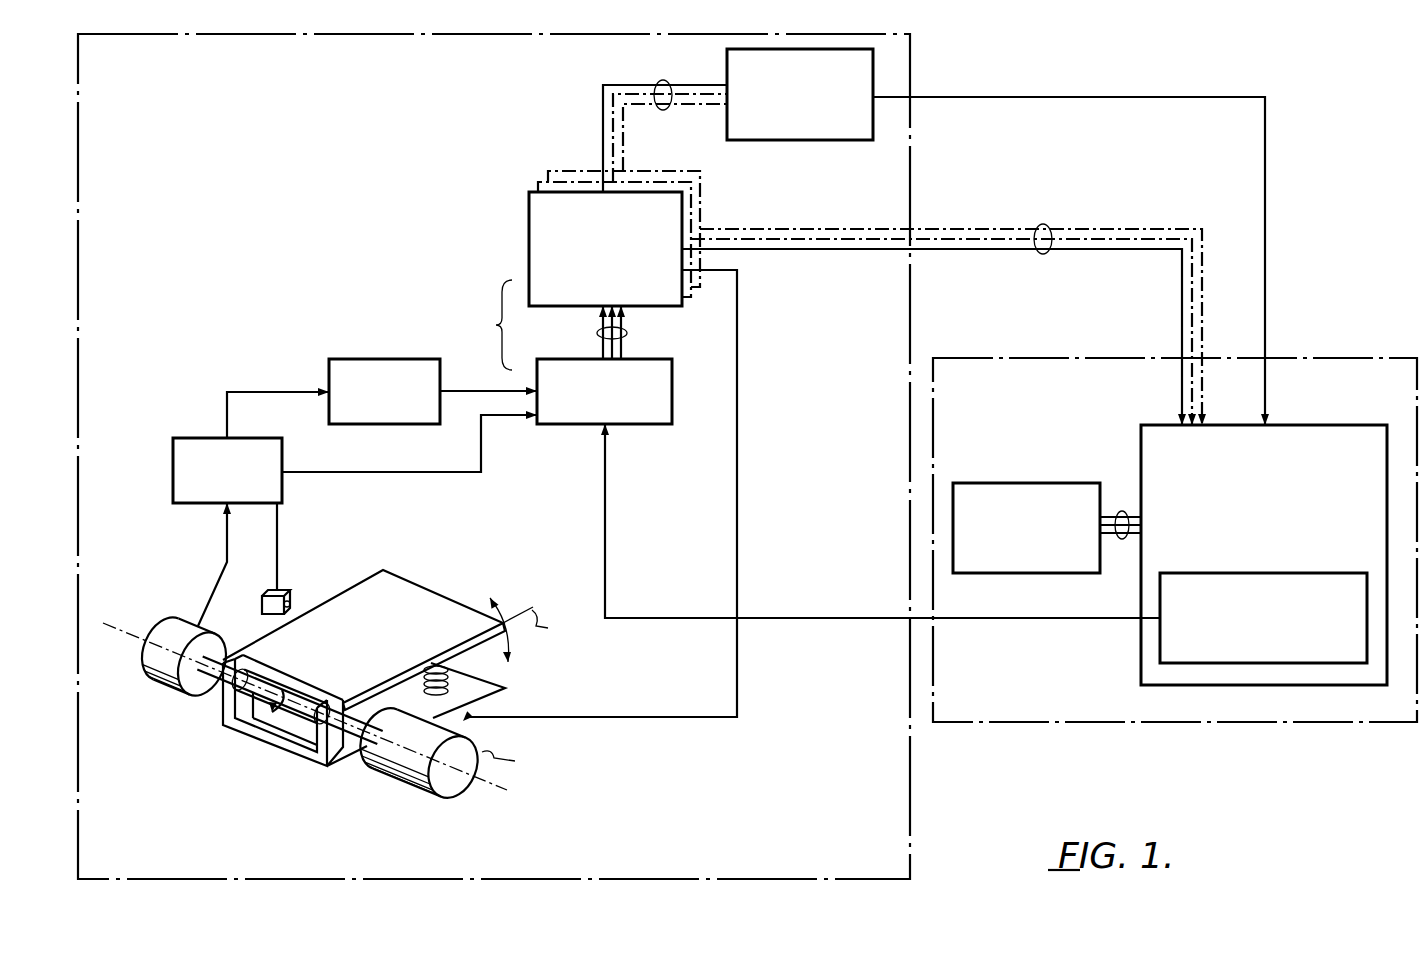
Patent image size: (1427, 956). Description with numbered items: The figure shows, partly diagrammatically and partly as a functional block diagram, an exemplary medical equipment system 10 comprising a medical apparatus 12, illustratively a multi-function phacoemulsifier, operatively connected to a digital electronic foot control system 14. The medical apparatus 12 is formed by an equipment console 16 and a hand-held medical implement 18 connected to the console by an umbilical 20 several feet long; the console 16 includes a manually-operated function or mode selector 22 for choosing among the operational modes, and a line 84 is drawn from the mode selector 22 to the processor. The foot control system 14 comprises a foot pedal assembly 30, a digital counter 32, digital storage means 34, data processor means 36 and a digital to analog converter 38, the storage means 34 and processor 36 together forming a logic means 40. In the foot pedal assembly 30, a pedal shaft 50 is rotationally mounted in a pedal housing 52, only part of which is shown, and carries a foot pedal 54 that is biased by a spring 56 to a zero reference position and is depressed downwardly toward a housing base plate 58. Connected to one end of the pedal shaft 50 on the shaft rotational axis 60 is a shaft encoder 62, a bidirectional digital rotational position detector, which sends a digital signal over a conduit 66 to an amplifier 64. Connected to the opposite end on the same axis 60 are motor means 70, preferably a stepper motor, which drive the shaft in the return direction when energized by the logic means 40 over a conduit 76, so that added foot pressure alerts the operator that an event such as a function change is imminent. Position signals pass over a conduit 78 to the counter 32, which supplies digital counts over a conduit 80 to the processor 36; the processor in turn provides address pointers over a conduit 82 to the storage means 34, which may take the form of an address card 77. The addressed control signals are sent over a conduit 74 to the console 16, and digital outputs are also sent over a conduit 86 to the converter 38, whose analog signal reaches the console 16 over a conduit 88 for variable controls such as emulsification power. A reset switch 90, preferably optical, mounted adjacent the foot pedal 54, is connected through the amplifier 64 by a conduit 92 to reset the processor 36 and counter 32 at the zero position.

The medical equipment system 10 is at (1094, 749).
The medical apparatus 12 is at (1203, 723).
The digital electronic foot control system 14 is at (912, 860).
The equipment console 16 is at (1260, 686).
The hand-held medical implement 18 is at (1006, 482).
The umbilical 20 is at (1128, 512).
The function or mode selector 22 is at (1328, 573).
The foot pedal assembly 30 is at (349, 679).
The digital counter 32 is at (372, 358).
The digital storage means 34 is at (527, 217).
The data processor means 36 is at (566, 426).
The digital to analog converter 38 is at (790, 142).
The logic means 40 is at (490, 325).
The pedal shaft 50 is at (325, 693).
The pedal housing 52 is at (305, 772).
The foot pedal 54 is at (374, 578).
The spring 56 is at (449, 686).
The housing base plate 58 is at (505, 688).
The shaft rotational axis 60 is at (123, 625).
The shaft encoder 62 is at (142, 663).
The amplifier 64 is at (200, 437).
The conduit 66 is at (223, 548).
The motor means 70 is at (403, 788).
The conduit 74 is at (1049, 226).
The conduit 76 is at (668, 716).
The address card 77 is at (529, 194).
The conduit 78 is at (273, 390).
The conduit 80 is at (489, 390).
The conduit 82 is at (628, 333).
The mode selector to processor line 84 is at (1016, 619).
The conduit 86 is at (664, 80).
The conduit 88 is at (1266, 233).
The reset switch 90 is at (288, 593).
The conduit 92 is at (395, 474).